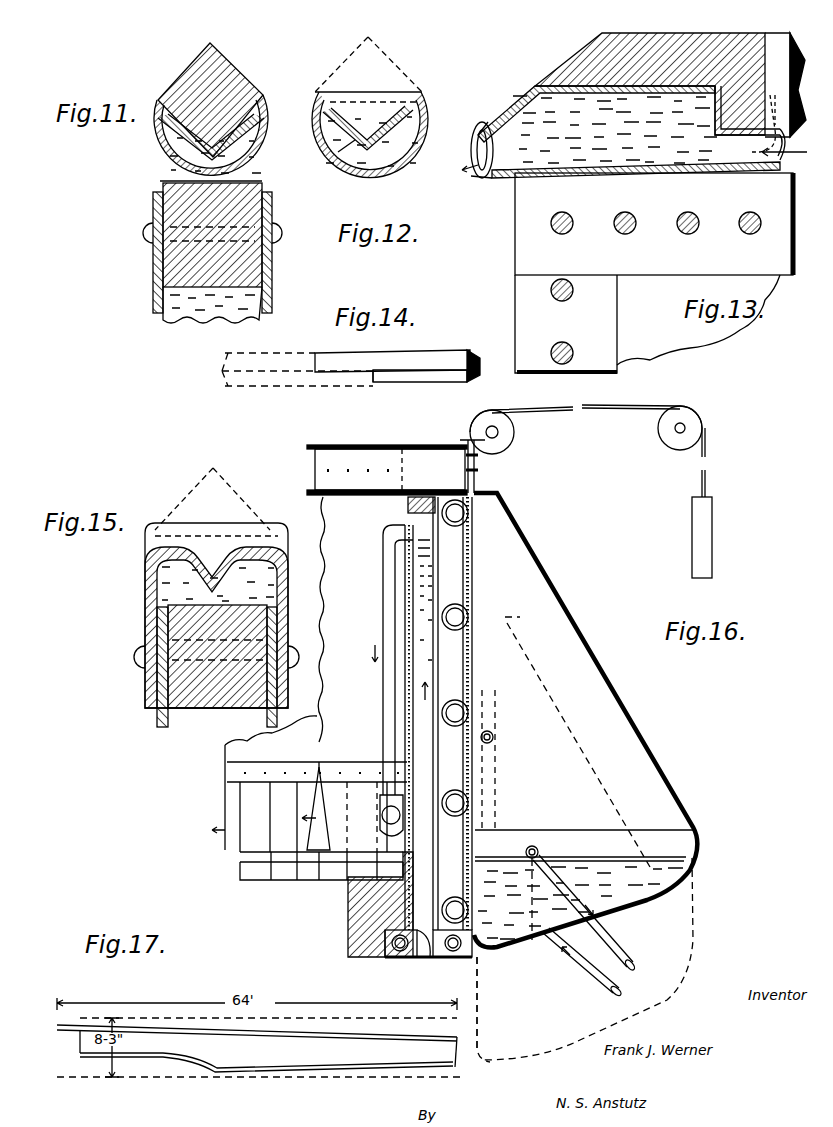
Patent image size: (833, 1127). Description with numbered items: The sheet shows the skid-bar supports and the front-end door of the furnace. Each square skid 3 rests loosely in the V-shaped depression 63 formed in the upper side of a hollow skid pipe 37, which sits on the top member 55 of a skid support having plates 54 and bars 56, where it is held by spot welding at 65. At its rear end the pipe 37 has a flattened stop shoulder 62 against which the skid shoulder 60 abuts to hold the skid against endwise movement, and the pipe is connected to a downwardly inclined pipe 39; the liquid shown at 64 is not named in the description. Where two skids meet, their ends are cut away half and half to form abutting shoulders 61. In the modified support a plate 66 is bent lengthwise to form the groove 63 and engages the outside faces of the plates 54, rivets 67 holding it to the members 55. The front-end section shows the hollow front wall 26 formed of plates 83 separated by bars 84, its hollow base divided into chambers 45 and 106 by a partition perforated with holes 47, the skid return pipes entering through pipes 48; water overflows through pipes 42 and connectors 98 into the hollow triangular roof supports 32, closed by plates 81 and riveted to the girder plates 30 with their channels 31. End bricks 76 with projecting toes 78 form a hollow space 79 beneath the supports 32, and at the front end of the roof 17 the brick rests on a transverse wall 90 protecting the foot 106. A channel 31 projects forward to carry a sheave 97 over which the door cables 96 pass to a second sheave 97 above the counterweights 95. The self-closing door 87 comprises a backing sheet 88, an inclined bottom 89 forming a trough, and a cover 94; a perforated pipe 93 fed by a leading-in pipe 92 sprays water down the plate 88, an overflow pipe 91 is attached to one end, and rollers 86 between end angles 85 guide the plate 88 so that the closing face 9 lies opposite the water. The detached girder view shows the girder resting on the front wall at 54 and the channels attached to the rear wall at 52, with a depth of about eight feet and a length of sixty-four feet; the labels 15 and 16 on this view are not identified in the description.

In FIG. 11, the skid 3 is at (236, 58).
In FIG. 12, the skid 3 is at (352, 66).
In FIG. 13, the skid 3 is at (772, 32).
In FIG. 14, the skid 3 is at (440, 361).
In FIG. 16, the closing face of the door 9 is at (478, 1015).
In FIG. 17, the sloped portion 15 is at (172, 1062).
In FIG. 17, the bend 16 is at (218, 1070).
In FIG. 17, the roof 17 is at (345, 1068).
In FIG. 16, the hollow front wall 26 is at (430, 590).
In FIG. 16, the girder plate 30 is at (332, 596).
In FIG. 17, the girder plate 30 is at (293, 1028).
In FIG. 16, the channel 31 is at (356, 490).
In FIG. 17, the channel 31 is at (333, 1030).
In FIG. 16, the hollow triangular roof support 32 is at (330, 828).
In FIG. 17, the hollow triangular roof support 32 is at (243, 1066).
In FIG. 11, the skid pipe 37 is at (258, 166).
In FIG. 12, the skid pipe 37 is at (410, 160).
In FIG. 13, the skid pipe 37 is at (672, 172).
In FIG. 12, the downwardly inclined pipe 39 is at (338, 152).
In FIG. 13, the downwardly inclined pipe 39 is at (500, 182).
In FIG. 15, the downwardly inclined pipe 39 is at (213, 548).
In FIG. 16, the overflow pipe 42 is at (383, 585).
In FIG. 16, the chamber 45 is at (476, 952).
In FIG. 16, the holes 47 is at (428, 957).
In FIG. 16, the pipes 48 is at (402, 958).
In FIG. 17, the rear wall attachment 52 is at (66, 1027).
In FIG. 11, the plates 54 is at (270, 290).
In FIG. 13, the plates 54 is at (715, 346).
In FIG. 15, the plates 54 is at (157, 730).
In FIG. 17, the plates 54 is at (458, 1045).
In FIG. 11, the top member 55 is at (245, 262).
In FIG. 13, the top member 55 is at (650, 264).
In FIG. 15, the top member 55 is at (217, 665).
In FIG. 13, the bars 56 is at (606, 325).
In FIG. 13, the skid shoulder 60 is at (767, 119).
In FIG. 14, the abutting shoulders 61 is at (372, 382).
In FIG. 11, the stop shoulder 62 is at (264, 106).
In FIG. 12, the stop shoulder 62 is at (352, 106).
In FIG. 13, the stop shoulder 62 is at (716, 122).
In FIG. 11, the V-shaped depression 63 is at (185, 135).
In FIG. 12, the V-shaped depression 63 is at (372, 136).
In FIG. 15, the V-shaped depression 63 is at (218, 575).
In FIG. 12, the liquid body 64 is at (385, 92).
In FIG. 13, the liquid body 64 is at (604, 98).
In FIG. 11, the spot welding 65 is at (178, 178).
In FIG. 15, the channel 66 is at (147, 598).
In FIG. 15, the rivets 67 is at (140, 660).
In FIG. 16, the end brick 76 is at (313, 817).
In FIG. 16, the projecting toes 78 is at (257, 880).
In FIG. 16, the hollow space 79 is at (248, 857).
In FIG. 16, the plates 81 is at (400, 768).
In FIG. 16, the plates 83 is at (440, 612).
In FIG. 16, the bars 84 is at (420, 497).
In FIG. 16, the end angles 85 is at (440, 563).
In FIG. 16, the rollers 86 is at (462, 518).
In FIG. 16, the self-closing door 87 is at (590, 830).
In FIG. 16, the backing sheet 88 is at (474, 672).
In FIG. 16, the inclined bottom 89 is at (580, 898).
In FIG. 16, the transverse wall 90 is at (348, 910).
In FIG. 16, the overflow pipe 91 is at (533, 845).
In FIG. 16, the leading-in pipe 92 is at (588, 964).
In FIG. 16, the perforated pipe 93 is at (493, 733).
In FIG. 16, the cover 94 is at (612, 688).
In FIG. 16, the counterweights 95 is at (712, 540).
In FIG. 16, the door cables 96 is at (587, 451).
In FIG. 16, the sheaves 97 is at (522, 440).
In FIG. 16, the connectors 98 is at (382, 818).
In FIG. 16, the chamber 106 is at (390, 958).